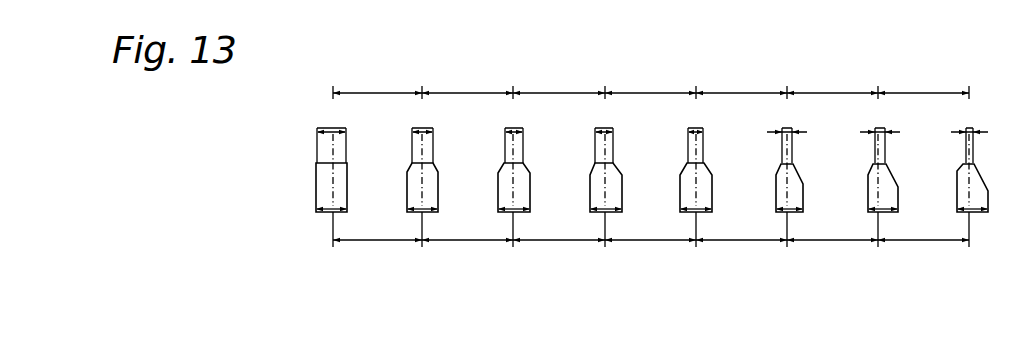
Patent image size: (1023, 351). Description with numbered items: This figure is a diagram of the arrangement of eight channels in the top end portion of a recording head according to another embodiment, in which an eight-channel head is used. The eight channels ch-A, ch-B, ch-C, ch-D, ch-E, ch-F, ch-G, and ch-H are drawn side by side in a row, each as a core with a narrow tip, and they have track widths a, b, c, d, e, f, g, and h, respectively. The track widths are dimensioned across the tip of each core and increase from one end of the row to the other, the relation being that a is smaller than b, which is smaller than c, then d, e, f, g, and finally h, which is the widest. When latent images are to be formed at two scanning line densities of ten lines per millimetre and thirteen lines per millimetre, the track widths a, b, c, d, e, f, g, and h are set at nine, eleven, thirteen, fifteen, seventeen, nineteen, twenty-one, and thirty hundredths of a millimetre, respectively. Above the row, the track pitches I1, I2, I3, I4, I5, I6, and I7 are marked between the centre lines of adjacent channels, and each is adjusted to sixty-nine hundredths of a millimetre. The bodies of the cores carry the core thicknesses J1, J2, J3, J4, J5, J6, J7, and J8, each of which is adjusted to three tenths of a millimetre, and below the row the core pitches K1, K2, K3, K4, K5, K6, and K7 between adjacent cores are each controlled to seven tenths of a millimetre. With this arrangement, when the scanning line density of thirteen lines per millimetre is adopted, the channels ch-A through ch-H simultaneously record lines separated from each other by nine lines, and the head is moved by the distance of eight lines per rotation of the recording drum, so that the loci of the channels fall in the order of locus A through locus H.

The core thickness J1 is at (972, 173).
The core thickness J2 is at (883, 173).
The core thickness J3 is at (789, 173).
The core thickness J4 is at (696, 173).
The core thickness J5 is at (606, 173).
The core thickness J6 is at (514, 173).
The core thickness J7 is at (422, 173).
The core thickness J8 is at (331, 173).
The channel ch-A is at (957, 197).
The channel ch-B is at (868, 198).
The channel ch-C is at (776, 198).
The channel ch-D is at (680, 198).
The channel ch-E is at (590, 198).
The channel ch-F is at (498, 198).
The channel ch-G is at (407, 190).
The channel ch-H is at (348, 178).
The track width a is at (967, 133).
The track width b is at (878, 133).
The track width c is at (787, 133).
The track width d is at (695, 133).
The track width e is at (604, 133).
The track width f is at (514, 133).
The track width g is at (422, 133).
The track width h is at (331, 133).
The track pitch I1 is at (923, 82).
The track pitch I2 is at (832, 82).
The track pitch I3 is at (741, 82).
The track pitch I4 is at (650, 82).
The track pitch I5 is at (559, 82).
The track pitch I6 is at (467, 82).
The track pitch I7 is at (377, 82).
The core pitch K1 is at (923, 231).
The core pitch K2 is at (832, 231).
The core pitch K3 is at (741, 231).
The core pitch K4 is at (650, 231).
The core pitch K5 is at (559, 231).
The core pitch K6 is at (467, 231).
The core pitch K7 is at (377, 231).